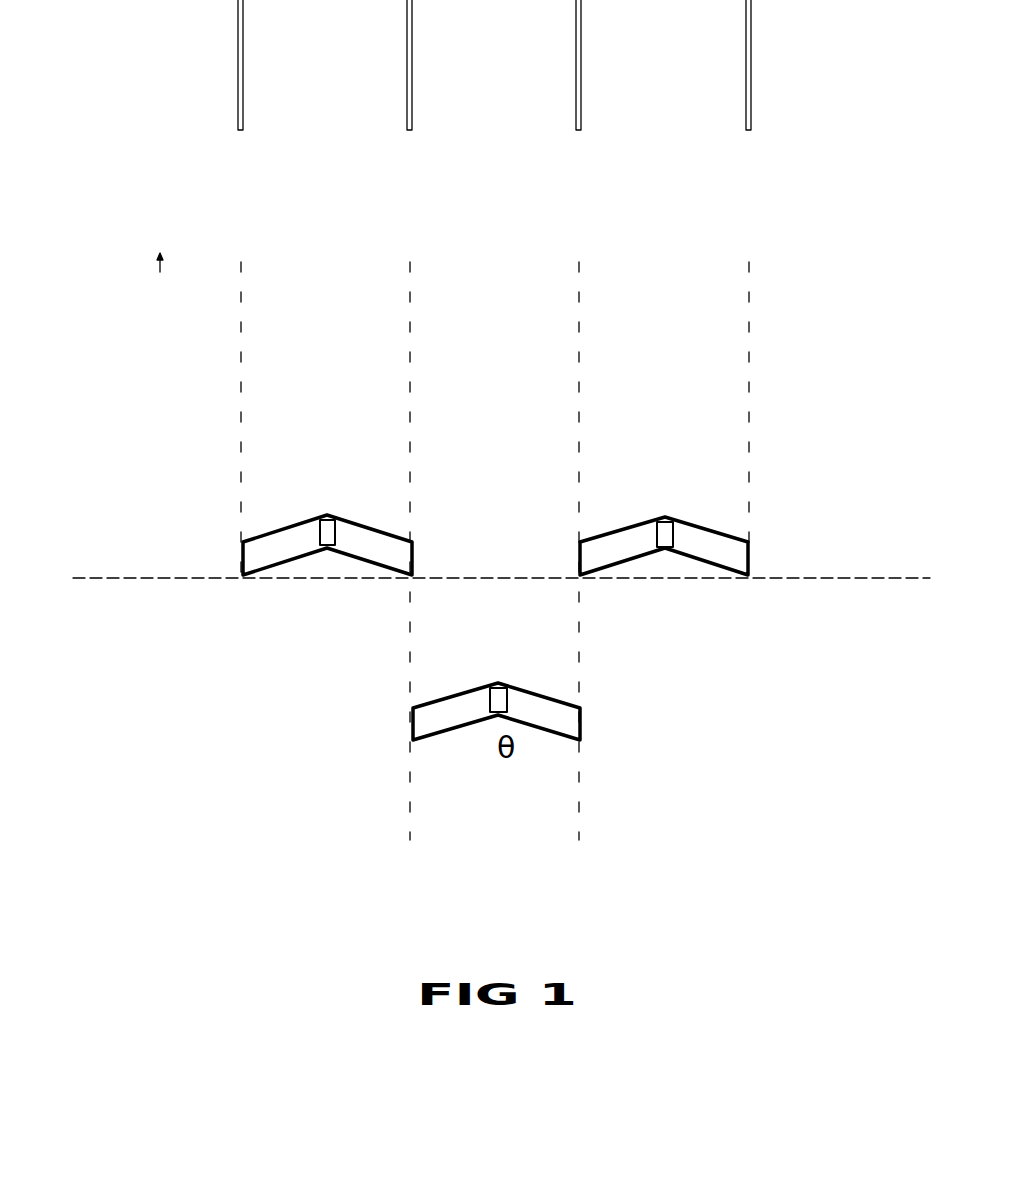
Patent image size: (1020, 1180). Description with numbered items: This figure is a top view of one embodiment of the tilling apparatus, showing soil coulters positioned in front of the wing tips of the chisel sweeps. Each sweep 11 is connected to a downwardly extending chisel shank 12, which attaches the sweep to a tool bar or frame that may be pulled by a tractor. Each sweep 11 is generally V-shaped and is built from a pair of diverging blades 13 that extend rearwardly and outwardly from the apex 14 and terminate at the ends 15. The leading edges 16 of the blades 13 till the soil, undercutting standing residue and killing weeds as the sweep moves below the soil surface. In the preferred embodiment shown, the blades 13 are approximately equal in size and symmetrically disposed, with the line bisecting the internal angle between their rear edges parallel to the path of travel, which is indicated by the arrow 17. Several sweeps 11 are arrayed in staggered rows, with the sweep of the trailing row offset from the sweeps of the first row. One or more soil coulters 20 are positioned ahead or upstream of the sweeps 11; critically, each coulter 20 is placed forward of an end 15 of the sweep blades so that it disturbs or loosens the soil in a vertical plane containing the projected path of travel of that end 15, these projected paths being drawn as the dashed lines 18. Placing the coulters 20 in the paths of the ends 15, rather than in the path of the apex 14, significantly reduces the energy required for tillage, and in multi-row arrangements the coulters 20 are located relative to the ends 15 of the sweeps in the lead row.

The sweep 11 is at (370, 603).
The chisel shank 12 is at (343, 573).
The blades 13 is at (408, 559).
The apex 14 is at (664, 489).
The ends 15 is at (517, 647).
The leading edges 16 is at (439, 468).
The arrow 17 is at (118, 262).
The dashed lines 18 is at (516, 551).
The soil coulters 20 is at (471, 65).